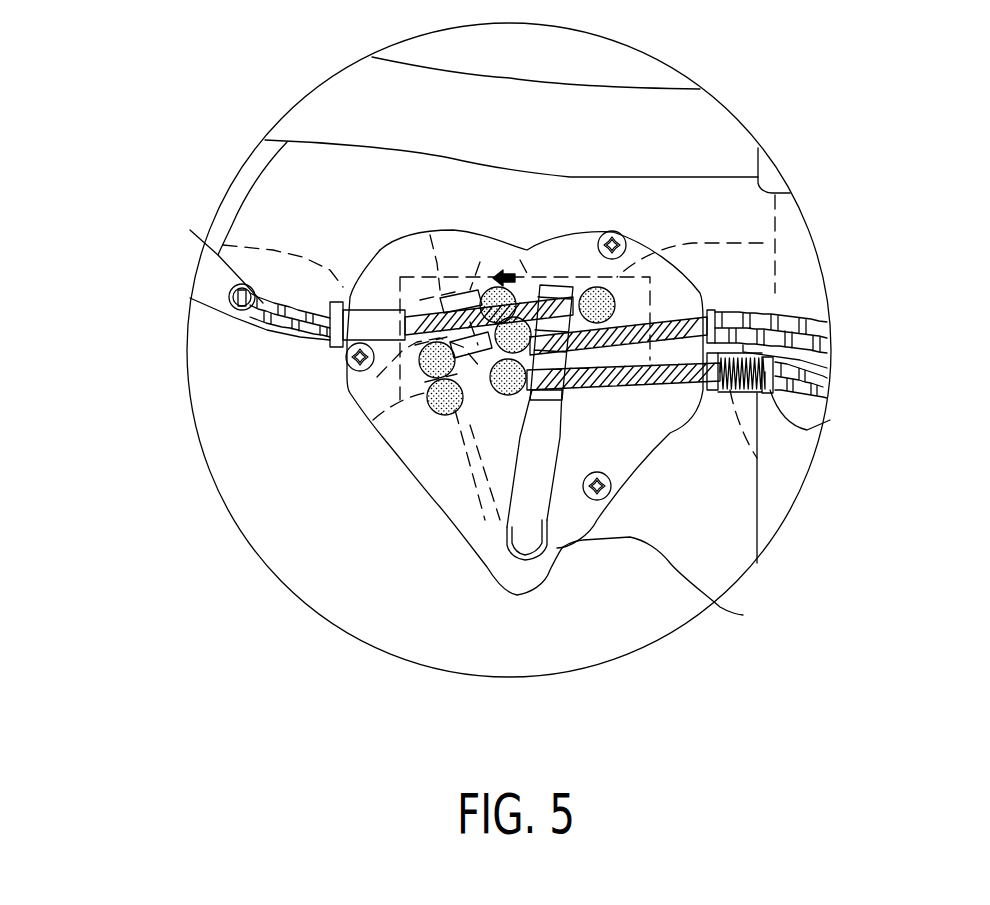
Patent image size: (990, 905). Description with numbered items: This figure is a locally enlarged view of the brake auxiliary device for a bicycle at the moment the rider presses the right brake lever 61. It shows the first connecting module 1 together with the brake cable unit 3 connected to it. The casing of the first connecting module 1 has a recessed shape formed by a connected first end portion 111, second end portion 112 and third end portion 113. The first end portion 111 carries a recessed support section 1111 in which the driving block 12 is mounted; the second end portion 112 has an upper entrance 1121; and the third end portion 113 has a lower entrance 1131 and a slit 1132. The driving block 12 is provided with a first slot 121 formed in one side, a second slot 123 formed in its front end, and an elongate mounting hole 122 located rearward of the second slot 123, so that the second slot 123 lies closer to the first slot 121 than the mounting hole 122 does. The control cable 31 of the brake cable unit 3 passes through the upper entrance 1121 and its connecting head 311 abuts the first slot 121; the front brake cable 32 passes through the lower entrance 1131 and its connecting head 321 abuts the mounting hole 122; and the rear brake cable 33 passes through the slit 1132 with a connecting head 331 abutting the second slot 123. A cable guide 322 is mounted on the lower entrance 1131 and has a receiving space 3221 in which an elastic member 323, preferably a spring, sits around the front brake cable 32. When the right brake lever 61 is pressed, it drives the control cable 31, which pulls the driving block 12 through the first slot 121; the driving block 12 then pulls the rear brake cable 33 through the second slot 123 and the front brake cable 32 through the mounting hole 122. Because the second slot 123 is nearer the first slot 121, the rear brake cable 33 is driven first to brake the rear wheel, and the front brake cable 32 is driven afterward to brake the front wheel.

The first connecting module 1 is at (658, 220).
The brake cable unit 3 is at (248, 333).
The driving block 12 is at (481, 438).
The control cable 31 is at (478, 167).
The front brake cable 32 is at (515, 433).
The rear brake cable 33 is at (505, 370).
The right brake lever 61 is at (203, 278).
The first end portion 111 is at (520, 532).
The second end portion 112 is at (228, 185).
The third end portion 113 is at (607, 277).
The first slot 121 is at (767, 203).
The mounting hole 122 is at (241, 452).
The second slot 123 is at (256, 383).
The connecting head 311 is at (763, 243).
The connecting head 321 is at (373, 420).
The cable guide 322 is at (760, 393).
The elastic member 323 is at (757, 458).
The connecting head 331 is at (377, 377).
The recessed support section 1111 is at (743, 615).
The upper entrance 1121 is at (400, 250).
The lower entrance 1131 is at (830, 377).
The slit 1132 is at (830, 337).
The receiving space 3221 is at (858, 453).